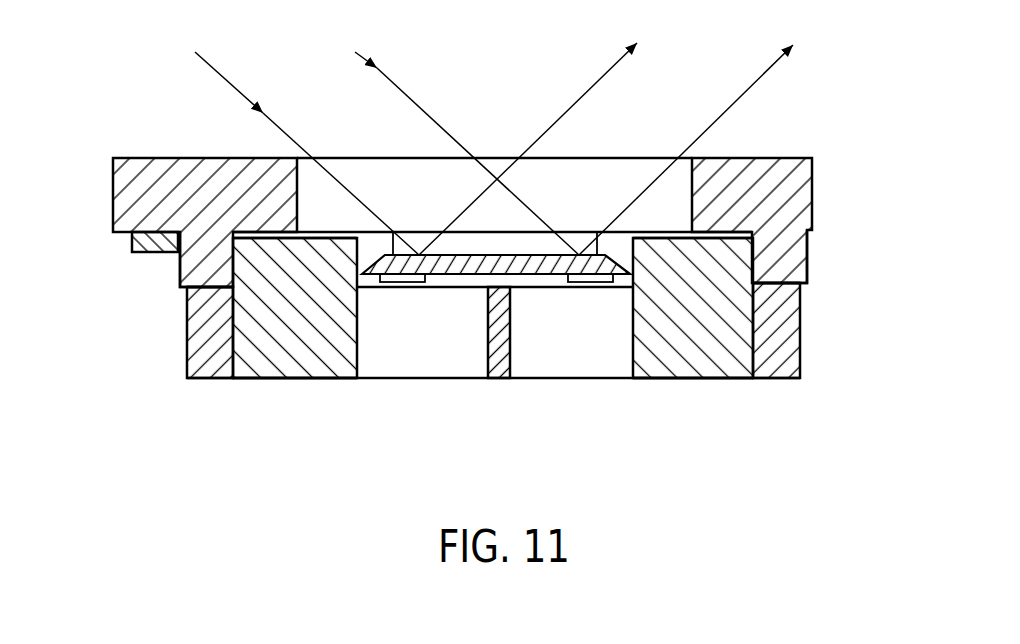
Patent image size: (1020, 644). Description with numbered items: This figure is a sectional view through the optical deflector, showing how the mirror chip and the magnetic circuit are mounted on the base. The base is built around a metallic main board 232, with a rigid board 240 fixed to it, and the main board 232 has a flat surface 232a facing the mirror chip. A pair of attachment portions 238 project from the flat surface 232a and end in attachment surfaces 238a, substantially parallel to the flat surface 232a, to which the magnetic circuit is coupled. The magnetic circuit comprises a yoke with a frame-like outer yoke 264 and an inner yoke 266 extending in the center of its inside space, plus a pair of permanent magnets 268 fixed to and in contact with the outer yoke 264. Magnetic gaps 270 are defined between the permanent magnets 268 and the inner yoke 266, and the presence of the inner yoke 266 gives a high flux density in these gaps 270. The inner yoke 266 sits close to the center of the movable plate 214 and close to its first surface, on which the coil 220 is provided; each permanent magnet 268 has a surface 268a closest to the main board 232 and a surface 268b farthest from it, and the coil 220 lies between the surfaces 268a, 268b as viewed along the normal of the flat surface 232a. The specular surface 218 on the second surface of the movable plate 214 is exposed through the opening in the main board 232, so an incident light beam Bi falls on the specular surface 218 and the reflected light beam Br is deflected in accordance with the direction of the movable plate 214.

The main board 232 is at (182, 173).
The flat surface 232a is at (465, 234).
The rigid board 240 is at (132, 240).
The attachment portion 238 is at (180, 270).
The attachment surface 238a is at (192, 292).
The outer yoke 264 is at (215, 367).
The permanent magnet 268 is at (303, 367).
The surface closest to the main board 268a is at (325, 238).
The surface farthest from the main board 268b is at (344, 380).
The inner yoke 266 is at (498, 366).
The magnetic gap 270 is at (455, 360).
The specular surface 218 is at (500, 253).
The movable plate 214 is at (540, 276).
The coil 220 is at (610, 283).
The incident light beam Bi is at (387, 153).
The reflected light beam Br is at (621, 149).